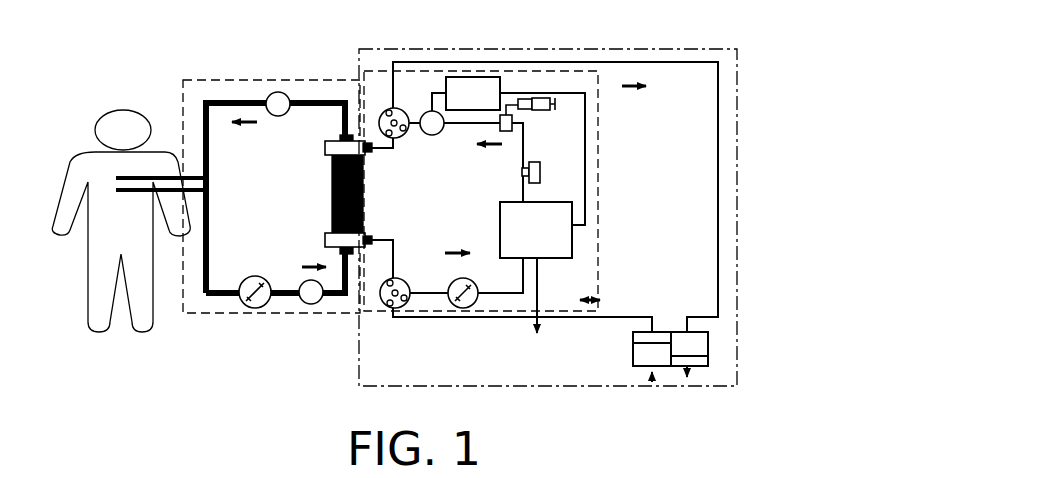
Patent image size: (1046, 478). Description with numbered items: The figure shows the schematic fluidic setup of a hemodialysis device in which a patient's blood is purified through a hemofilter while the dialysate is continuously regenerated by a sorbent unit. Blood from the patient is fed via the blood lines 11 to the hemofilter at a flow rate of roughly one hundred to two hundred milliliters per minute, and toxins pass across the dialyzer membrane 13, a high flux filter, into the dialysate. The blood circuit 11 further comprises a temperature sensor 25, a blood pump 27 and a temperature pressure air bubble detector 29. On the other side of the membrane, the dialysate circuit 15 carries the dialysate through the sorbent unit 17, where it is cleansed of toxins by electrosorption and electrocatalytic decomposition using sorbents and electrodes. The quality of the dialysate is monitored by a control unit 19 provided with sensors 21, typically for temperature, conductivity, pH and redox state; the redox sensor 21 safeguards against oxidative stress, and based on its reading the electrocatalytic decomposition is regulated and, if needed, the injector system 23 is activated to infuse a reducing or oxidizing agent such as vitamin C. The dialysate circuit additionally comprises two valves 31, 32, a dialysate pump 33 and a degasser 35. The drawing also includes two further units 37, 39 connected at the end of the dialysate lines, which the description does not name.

The blood lines 11 is at (177, 75).
The dialyzer membrane 13 is at (331, 193).
The dialysate circuit 15 is at (604, 145).
The sorbent unit 17 is at (560, 245).
The control unit 19 is at (468, 85).
The sensors 21 is at (421, 111).
The injector system 23 is at (529, 103).
The temperature sensor 25 is at (278, 92).
The blood pump 27 is at (253, 308).
The temperature pressure air bubble detector 29 is at (311, 304).
The valve 31 is at (395, 310).
The valve 32 is at (386, 110).
The dialysate pump 33 is at (463, 310).
The degasser 35 is at (541, 172).
The water supply unit 37 is at (632, 358).
The drain unit 39 is at (710, 355).